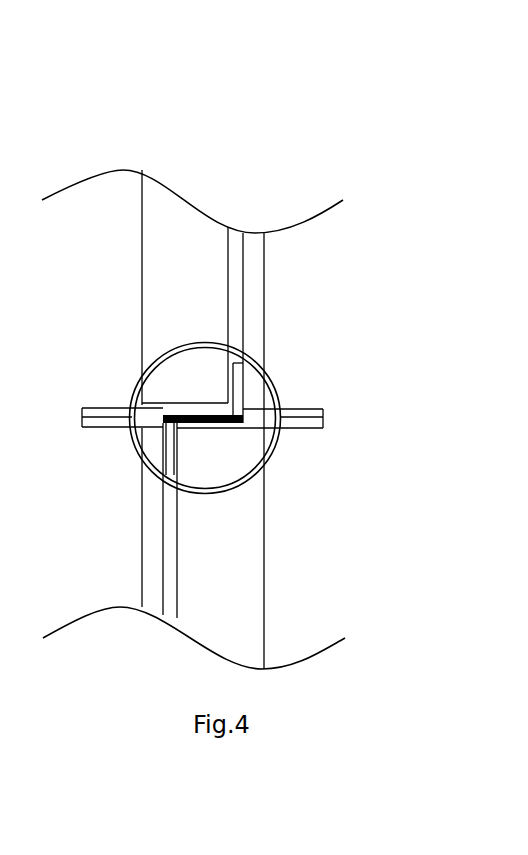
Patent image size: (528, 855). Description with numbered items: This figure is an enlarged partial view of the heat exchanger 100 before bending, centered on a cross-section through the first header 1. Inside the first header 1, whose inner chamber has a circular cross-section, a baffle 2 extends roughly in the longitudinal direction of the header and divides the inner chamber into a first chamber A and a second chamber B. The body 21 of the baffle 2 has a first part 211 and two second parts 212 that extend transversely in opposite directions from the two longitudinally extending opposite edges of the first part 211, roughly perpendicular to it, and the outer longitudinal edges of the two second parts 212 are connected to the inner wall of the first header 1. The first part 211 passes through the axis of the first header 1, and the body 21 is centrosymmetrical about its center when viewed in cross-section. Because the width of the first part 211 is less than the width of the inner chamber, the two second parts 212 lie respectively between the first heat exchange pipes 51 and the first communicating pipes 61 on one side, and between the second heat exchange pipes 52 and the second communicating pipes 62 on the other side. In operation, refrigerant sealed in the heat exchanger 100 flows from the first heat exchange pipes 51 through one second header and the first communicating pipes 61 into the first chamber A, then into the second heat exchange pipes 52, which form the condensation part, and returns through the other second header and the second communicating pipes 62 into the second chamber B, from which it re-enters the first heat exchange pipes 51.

The heat exchanger 100 is at (396, 169).
The second heat exchange pipes 52 is at (167, 268).
The second communicating pipes 62 is at (253, 288).
The first communicating pipes 61 is at (152, 555).
The first heat exchange pipes 51 is at (248, 563).
The first header 1 is at (272, 448).
The first chamber A is at (143, 422).
The second chamber B is at (258, 418).
The baffle 2 is at (195, 435).
The body of the baffle 21 is at (195, 435).
The first part 211 is at (208, 428).
The second parts 212 is at (242, 385).